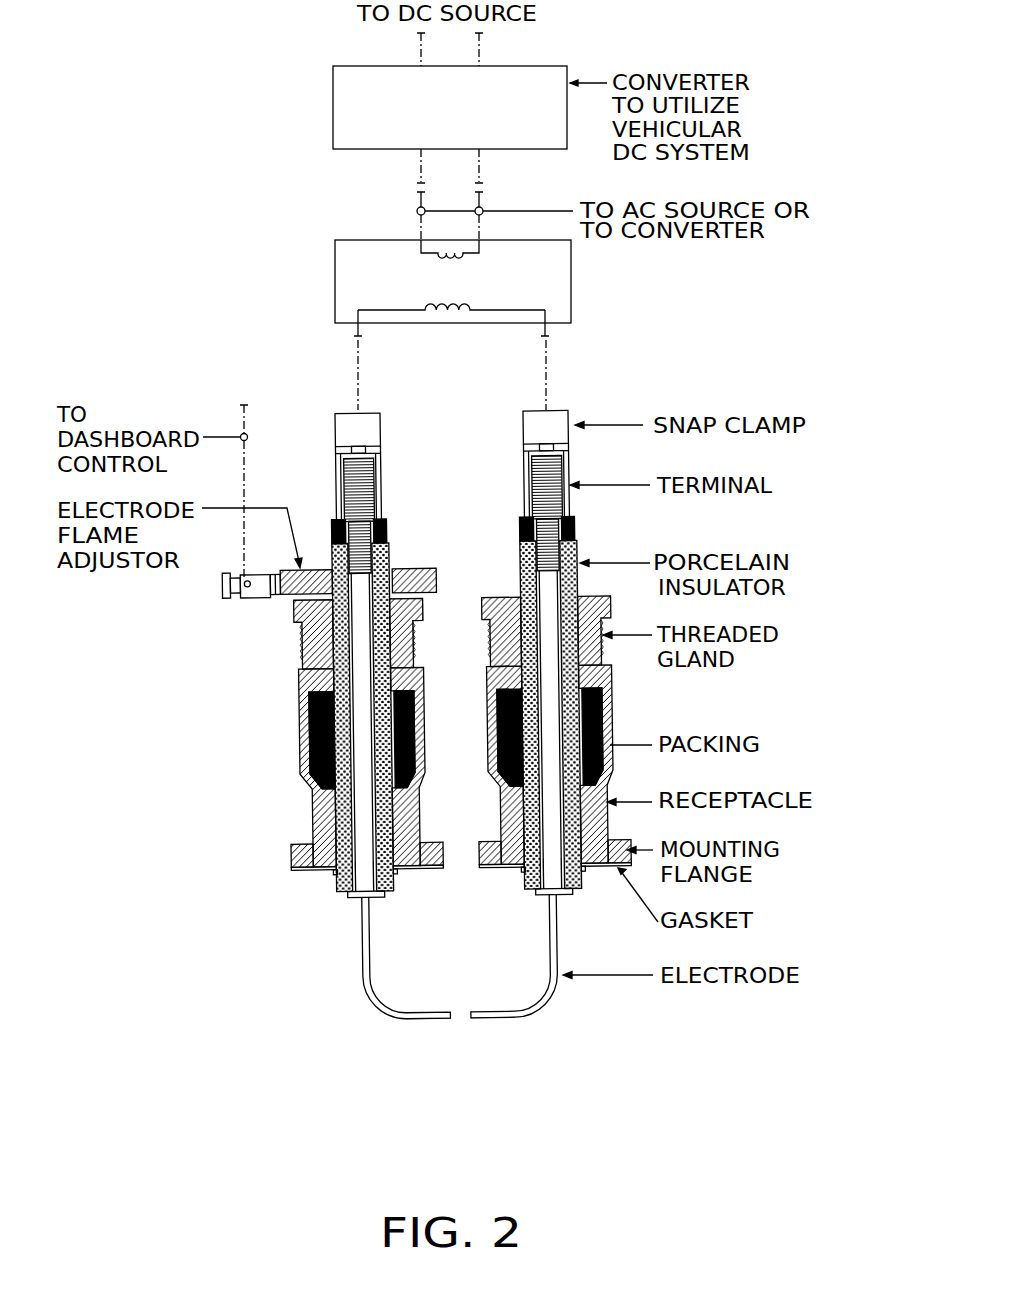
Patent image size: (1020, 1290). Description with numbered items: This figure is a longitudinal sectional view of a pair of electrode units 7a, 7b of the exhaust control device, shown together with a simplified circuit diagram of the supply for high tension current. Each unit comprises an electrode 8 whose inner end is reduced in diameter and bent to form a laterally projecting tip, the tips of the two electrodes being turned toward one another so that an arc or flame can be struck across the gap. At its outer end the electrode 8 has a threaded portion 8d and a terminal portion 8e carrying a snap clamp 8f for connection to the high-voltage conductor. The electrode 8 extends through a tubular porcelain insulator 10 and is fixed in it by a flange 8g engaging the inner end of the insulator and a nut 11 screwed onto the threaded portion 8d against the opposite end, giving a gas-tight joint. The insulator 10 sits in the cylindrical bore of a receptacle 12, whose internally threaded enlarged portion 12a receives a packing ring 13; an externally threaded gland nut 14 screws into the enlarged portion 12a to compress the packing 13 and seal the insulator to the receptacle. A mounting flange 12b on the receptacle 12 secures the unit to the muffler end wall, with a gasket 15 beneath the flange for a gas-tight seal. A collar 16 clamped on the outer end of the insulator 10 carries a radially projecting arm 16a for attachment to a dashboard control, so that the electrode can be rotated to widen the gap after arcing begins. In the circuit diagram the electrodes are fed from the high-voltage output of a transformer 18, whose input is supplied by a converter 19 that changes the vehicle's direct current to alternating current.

The electrode unit 7a is at (625, 735).
The electrode unit 7b is at (300, 740).
The electrode 8 is at (363, 807).
The threaded portion 8d is at (372, 507).
The terminal portion 8e is at (372, 467).
The snap clamp 8f is at (382, 428).
The flange 8g is at (373, 897).
The tubular porcelain insulator 10 is at (332, 658).
The nut 11 is at (387, 530).
The receptacle 12 is at (298, 760).
The internally threaded enlarged portion 12a is at (298, 703).
The flange 12b is at (288, 855).
The packing ring 13 is at (414, 733).
The gland nut 14 is at (414, 650).
The gasket 15 is at (420, 870).
The collar 16 is at (437, 572).
The radially projecting arm 16a is at (258, 595).
The transformer 18 is at (571, 291).
The converter 19 is at (535, 62).